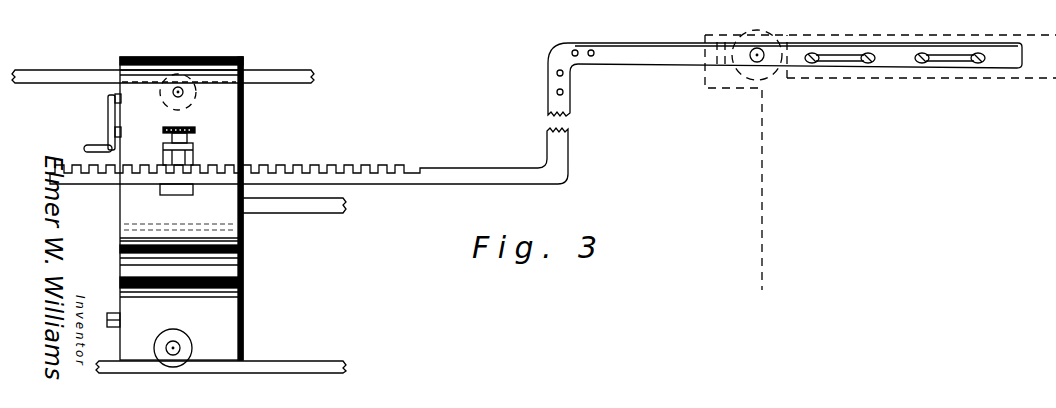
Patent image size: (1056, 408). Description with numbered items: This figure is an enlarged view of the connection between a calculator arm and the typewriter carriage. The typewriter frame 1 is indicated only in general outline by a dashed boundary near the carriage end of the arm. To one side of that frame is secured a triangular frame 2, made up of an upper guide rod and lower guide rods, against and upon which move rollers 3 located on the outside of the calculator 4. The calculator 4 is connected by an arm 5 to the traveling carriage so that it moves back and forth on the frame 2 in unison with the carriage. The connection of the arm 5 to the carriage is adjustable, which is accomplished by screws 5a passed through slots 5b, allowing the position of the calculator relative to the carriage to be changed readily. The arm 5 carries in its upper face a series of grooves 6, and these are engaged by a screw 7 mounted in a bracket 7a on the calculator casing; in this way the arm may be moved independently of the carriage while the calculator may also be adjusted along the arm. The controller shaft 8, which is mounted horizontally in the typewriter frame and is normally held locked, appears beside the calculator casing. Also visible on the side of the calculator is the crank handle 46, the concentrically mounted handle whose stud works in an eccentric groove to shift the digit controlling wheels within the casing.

The frame 1 is at (762, 101).
The triangular frame 2 is at (179, 212).
The rollers 3 is at (204, 59).
The calculator 4 is at (230, 128).
The arm 5 is at (668, 75).
The screws 5a is at (844, 78).
The slots 5b is at (943, 67).
The grooves 6 is at (312, 163).
The screw 7 is at (172, 128).
The bracket 7a is at (163, 193).
The controller shaft 8 is at (323, 213).
The crank handle 46 is at (104, 118).